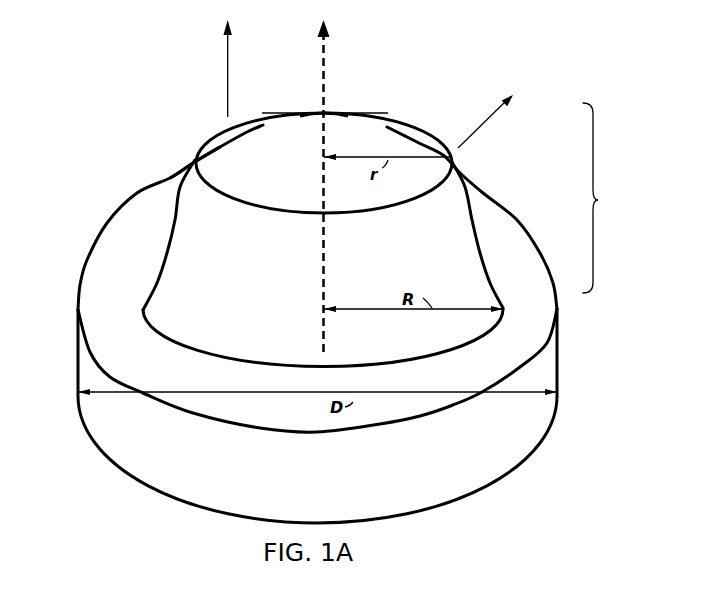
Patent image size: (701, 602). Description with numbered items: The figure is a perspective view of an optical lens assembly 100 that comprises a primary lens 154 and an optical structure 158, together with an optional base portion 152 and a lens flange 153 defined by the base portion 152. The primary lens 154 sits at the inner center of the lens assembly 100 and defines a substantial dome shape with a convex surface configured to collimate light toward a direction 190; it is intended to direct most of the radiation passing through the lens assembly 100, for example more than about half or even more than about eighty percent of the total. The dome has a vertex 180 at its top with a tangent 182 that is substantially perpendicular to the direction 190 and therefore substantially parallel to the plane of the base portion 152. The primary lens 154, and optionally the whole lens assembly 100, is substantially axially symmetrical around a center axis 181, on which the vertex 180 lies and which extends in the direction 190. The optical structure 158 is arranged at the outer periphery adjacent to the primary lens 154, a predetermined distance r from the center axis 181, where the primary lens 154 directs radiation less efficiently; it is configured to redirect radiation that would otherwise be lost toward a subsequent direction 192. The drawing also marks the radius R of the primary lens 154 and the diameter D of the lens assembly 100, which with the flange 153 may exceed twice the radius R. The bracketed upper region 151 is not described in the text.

The optical lens assembly 100 is at (78, 75).
The upper portion 151 is at (601, 200).
The base portion 152 is at (324, 486).
The lens flange 153 is at (132, 318).
The primary lens 154 is at (293, 183).
The optical structure 158 is at (188, 167).
The vertex 180 is at (318, 110).
The center axis 181 is at (325, 242).
The tangent 182 is at (377, 113).
The direction 190 is at (227, 80).
The subsequent direction 192 is at (483, 127).